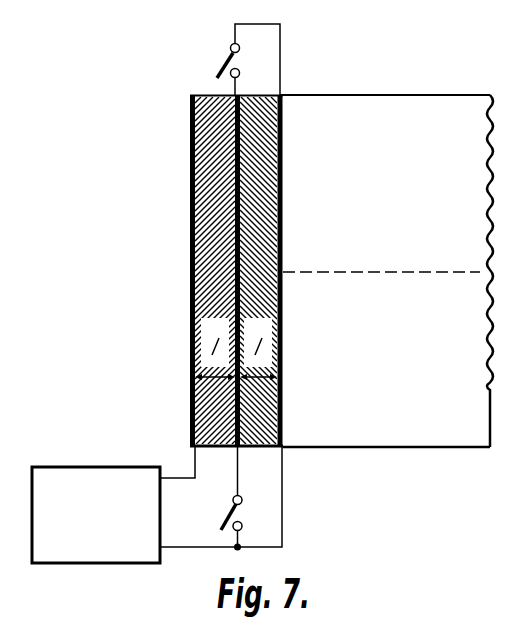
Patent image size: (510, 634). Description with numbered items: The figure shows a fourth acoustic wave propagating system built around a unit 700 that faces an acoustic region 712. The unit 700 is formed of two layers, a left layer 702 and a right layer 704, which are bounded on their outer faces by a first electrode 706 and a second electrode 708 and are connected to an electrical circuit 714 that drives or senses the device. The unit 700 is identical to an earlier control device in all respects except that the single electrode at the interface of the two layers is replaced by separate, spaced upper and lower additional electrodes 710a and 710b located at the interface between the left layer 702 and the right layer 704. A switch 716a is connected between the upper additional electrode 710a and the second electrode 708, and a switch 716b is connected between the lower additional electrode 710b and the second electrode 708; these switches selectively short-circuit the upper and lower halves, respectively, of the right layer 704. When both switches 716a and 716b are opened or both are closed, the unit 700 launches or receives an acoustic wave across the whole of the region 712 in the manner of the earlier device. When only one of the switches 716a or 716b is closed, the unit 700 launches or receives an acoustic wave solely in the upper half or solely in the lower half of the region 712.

The unit 700 is at (247, 271).
The left layer 702 is at (197, 177).
The right layer 704 is at (283, 308).
The first electrode 706 is at (193, 318).
The second electrode 708 is at (283, 224).
The upper additional electrode 710a is at (240, 178).
The lower additional electrode 710b is at (243, 411).
The region 712 is at (388, 105).
The electrical circuit 714 is at (98, 465).
The switch 716a is at (222, 63).
The switch 716b is at (225, 519).